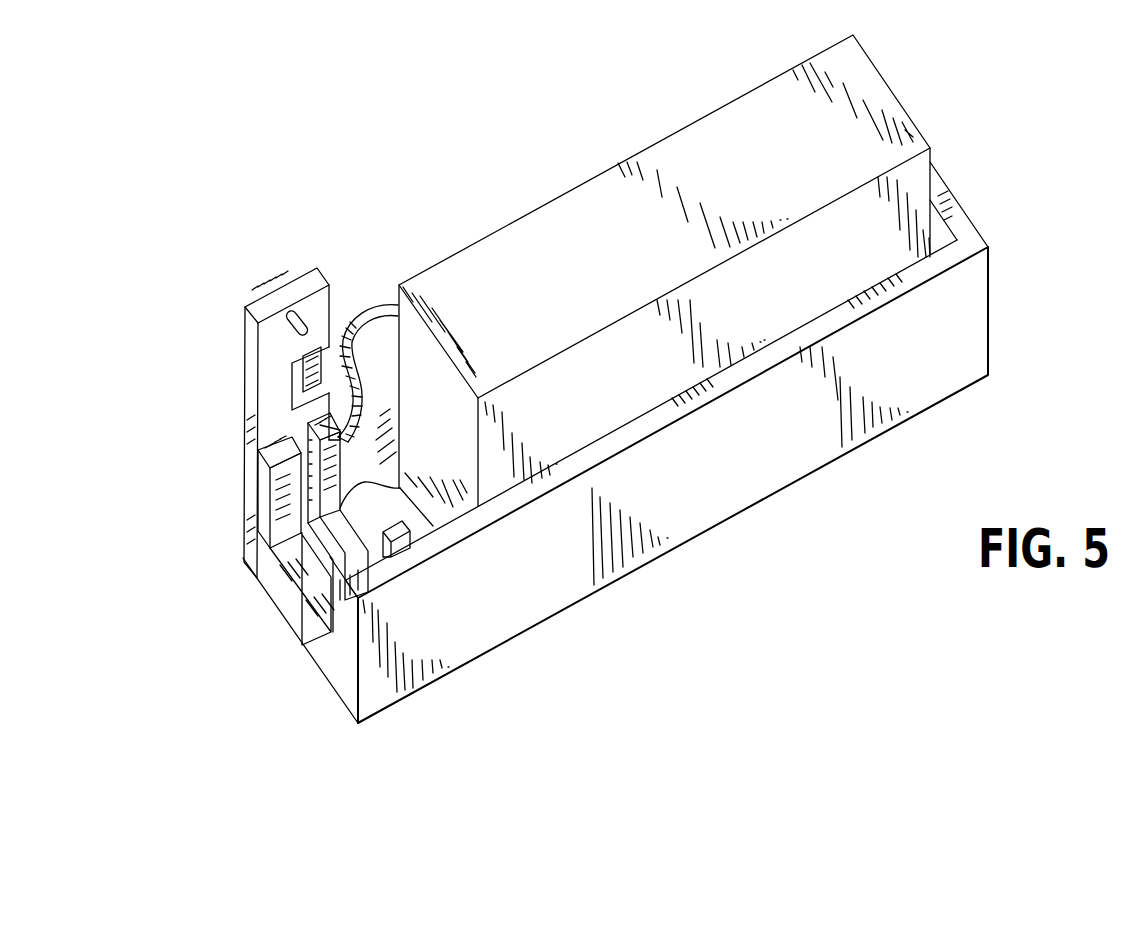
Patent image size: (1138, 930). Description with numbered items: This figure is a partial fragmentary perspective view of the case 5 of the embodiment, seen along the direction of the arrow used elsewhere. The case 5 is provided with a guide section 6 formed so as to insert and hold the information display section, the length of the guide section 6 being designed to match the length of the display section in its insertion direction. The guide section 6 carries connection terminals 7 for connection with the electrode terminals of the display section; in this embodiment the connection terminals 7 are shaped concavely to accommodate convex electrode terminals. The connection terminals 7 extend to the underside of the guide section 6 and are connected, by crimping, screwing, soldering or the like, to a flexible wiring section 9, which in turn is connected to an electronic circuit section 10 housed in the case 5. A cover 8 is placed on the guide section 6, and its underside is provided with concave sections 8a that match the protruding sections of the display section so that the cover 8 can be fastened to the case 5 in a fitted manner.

The case 5 is at (710, 530).
The guide section 6 is at (283, 573).
The connection terminals 7 is at (310, 488).
The cover 8 is at (236, 423).
The concave sections 8a is at (305, 382).
The flexible wiring section 9 is at (383, 307).
The electronic circuit section 10 is at (562, 195).